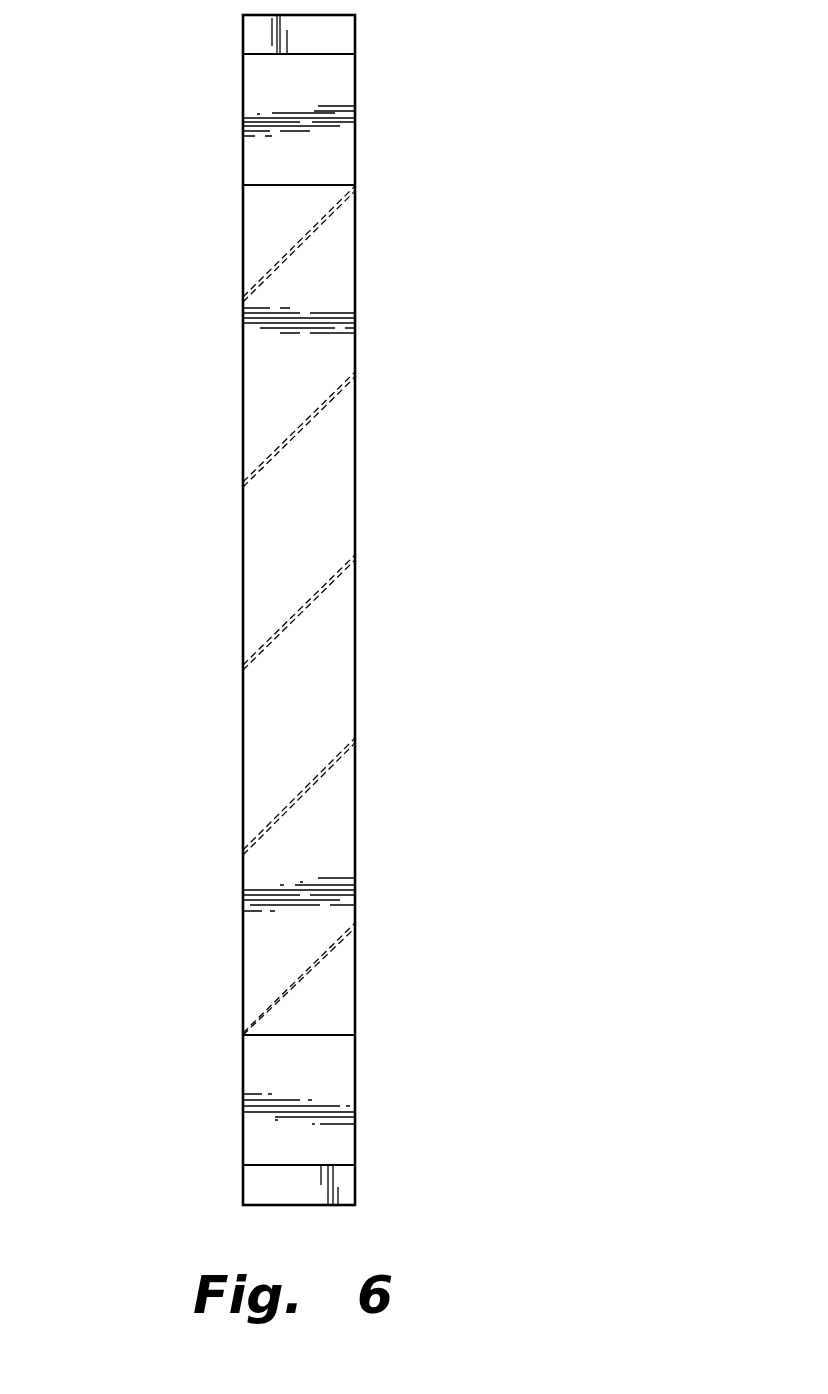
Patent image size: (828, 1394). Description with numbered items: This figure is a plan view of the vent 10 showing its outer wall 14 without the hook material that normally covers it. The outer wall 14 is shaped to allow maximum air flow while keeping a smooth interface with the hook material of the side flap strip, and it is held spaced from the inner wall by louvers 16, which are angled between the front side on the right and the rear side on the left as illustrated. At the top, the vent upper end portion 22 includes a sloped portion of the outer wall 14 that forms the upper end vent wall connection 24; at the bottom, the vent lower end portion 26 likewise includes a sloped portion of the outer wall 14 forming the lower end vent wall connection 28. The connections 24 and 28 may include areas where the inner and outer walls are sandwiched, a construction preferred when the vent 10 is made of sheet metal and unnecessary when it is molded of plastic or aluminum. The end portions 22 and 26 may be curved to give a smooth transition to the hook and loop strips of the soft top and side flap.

The vent 10 is at (161, 507).
The outer wall 14 is at (262, 712).
The louvers 16 is at (303, 240).
The vent upper end portion 22 is at (342, 143).
The upper end vent wall connection 24 is at (323, 38).
The vent lower end portion 26 is at (328, 1082).
The lower end vent wall connection 28 is at (342, 1183).